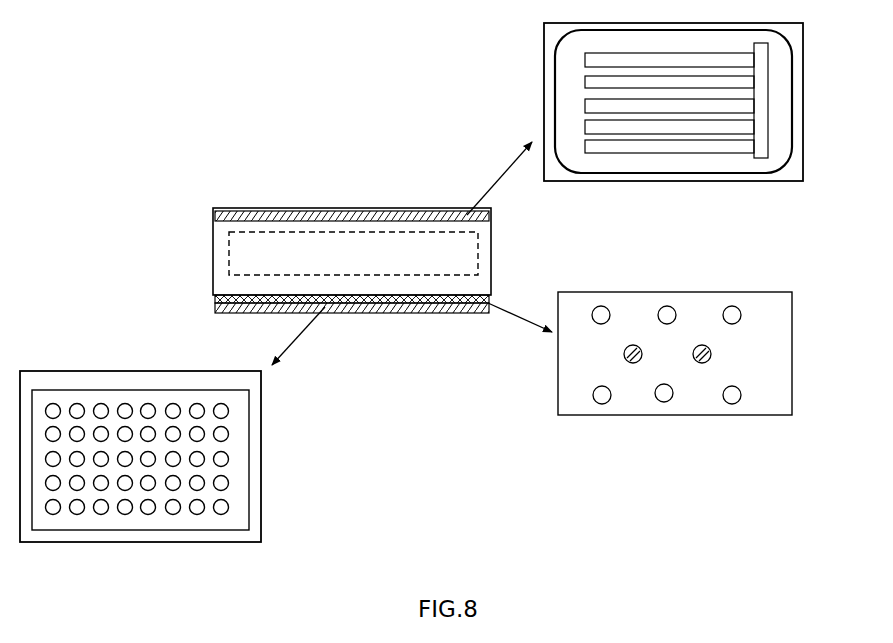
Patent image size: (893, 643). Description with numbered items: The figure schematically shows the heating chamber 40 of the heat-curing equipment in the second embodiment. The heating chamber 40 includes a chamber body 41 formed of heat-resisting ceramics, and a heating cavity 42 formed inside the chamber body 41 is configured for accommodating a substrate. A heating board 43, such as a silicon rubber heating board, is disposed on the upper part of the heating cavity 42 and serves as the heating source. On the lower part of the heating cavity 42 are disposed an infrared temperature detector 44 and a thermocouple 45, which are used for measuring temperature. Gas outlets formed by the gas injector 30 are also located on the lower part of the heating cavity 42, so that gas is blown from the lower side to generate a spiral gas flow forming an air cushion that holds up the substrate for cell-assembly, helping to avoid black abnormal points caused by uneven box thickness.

The gas injector 30 is at (223, 413).
The heating chamber 40 is at (210, 253).
The chamber body 41 is at (263, 208).
The heating cavity 42 is at (472, 252).
The heating board 43 is at (780, 77).
The infrared temperature detector 44 is at (735, 317).
The thermocouple 45 is at (712, 355).